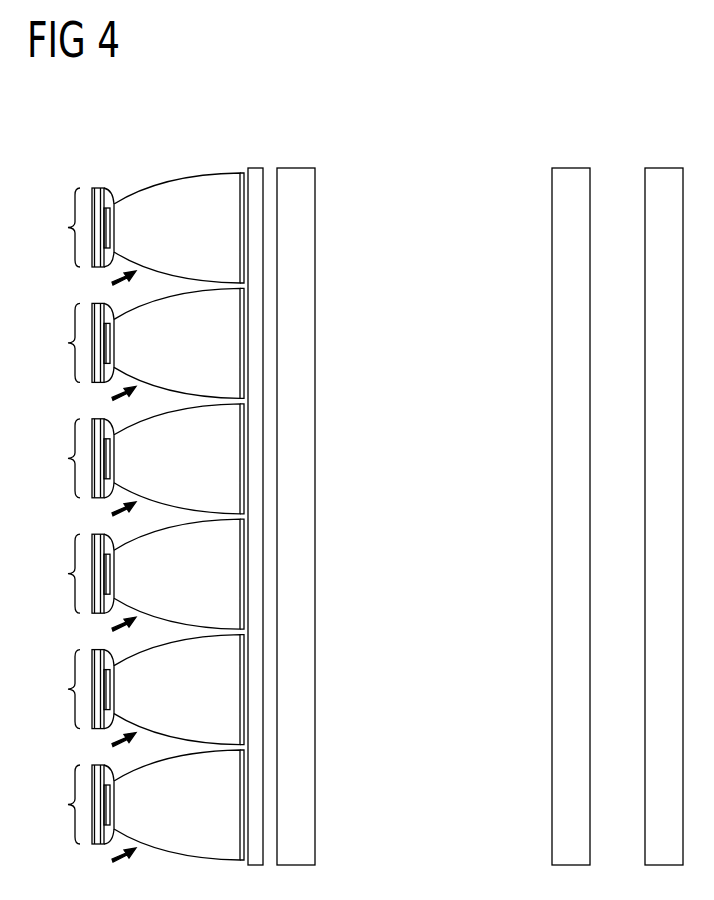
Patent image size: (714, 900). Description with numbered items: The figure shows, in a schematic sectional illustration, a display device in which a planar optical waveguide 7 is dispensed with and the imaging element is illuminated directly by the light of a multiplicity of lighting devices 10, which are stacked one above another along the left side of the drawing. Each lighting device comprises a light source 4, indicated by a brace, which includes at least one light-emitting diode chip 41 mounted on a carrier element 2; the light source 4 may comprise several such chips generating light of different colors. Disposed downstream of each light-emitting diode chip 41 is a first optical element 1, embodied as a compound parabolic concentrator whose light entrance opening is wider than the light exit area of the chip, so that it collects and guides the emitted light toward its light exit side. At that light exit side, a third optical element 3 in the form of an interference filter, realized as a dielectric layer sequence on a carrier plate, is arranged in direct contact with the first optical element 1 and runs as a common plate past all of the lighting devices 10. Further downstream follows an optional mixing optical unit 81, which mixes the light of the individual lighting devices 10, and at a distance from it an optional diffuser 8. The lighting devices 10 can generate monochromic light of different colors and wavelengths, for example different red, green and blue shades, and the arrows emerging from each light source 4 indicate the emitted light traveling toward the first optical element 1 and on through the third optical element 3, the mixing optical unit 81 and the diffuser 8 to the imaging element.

The first optical element 1 is at (190, 172).
The carrier substrate 2 is at (105, 187).
The third optical element 3 is at (255, 168).
The light source 4 is at (111, 480).
The planar optical waveguide 7 is at (665, 168).
The diffuser 8 is at (571, 168).
The lighting devices 10 is at (113, 284).
The light-emitting diode chip 41 is at (112, 224).
The mixing optical unit 81 is at (296, 168).